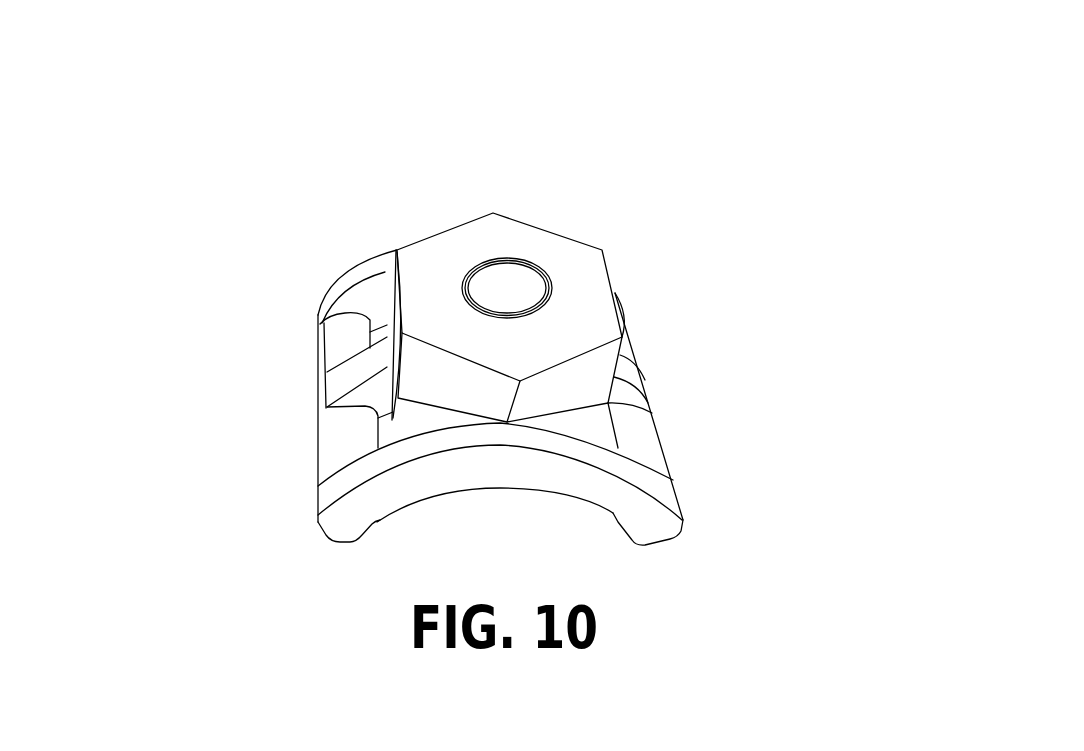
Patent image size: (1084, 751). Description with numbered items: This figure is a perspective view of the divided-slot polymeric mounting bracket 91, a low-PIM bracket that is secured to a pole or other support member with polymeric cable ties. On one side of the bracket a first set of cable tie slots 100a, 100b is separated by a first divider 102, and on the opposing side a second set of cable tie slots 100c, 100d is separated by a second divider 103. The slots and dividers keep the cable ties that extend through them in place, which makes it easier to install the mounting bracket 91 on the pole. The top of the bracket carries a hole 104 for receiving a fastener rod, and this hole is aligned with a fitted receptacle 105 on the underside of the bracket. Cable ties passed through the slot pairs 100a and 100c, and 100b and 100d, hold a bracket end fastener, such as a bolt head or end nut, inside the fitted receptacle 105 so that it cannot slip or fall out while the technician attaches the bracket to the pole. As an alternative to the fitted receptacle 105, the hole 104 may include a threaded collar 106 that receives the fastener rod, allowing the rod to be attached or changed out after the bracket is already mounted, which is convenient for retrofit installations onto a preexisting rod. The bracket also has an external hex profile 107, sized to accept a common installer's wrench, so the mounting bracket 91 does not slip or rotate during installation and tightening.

The divided-slot polymeric mounting bracket 91 is at (821, 159).
The cable tie slot 100a is at (360, 337).
The cable tie slot 100b is at (369, 440).
The cable tie slot 100c is at (655, 337).
The cable tie slot 100d is at (684, 446).
The first divider 102 is at (348, 378).
The second divider 103 is at (640, 388).
The hole 104 is at (525, 262).
The fitted receptacle 105 is at (505, 292).
The threaded collar 106 is at (427, 213).
The external hex profile 107 is at (629, 261).